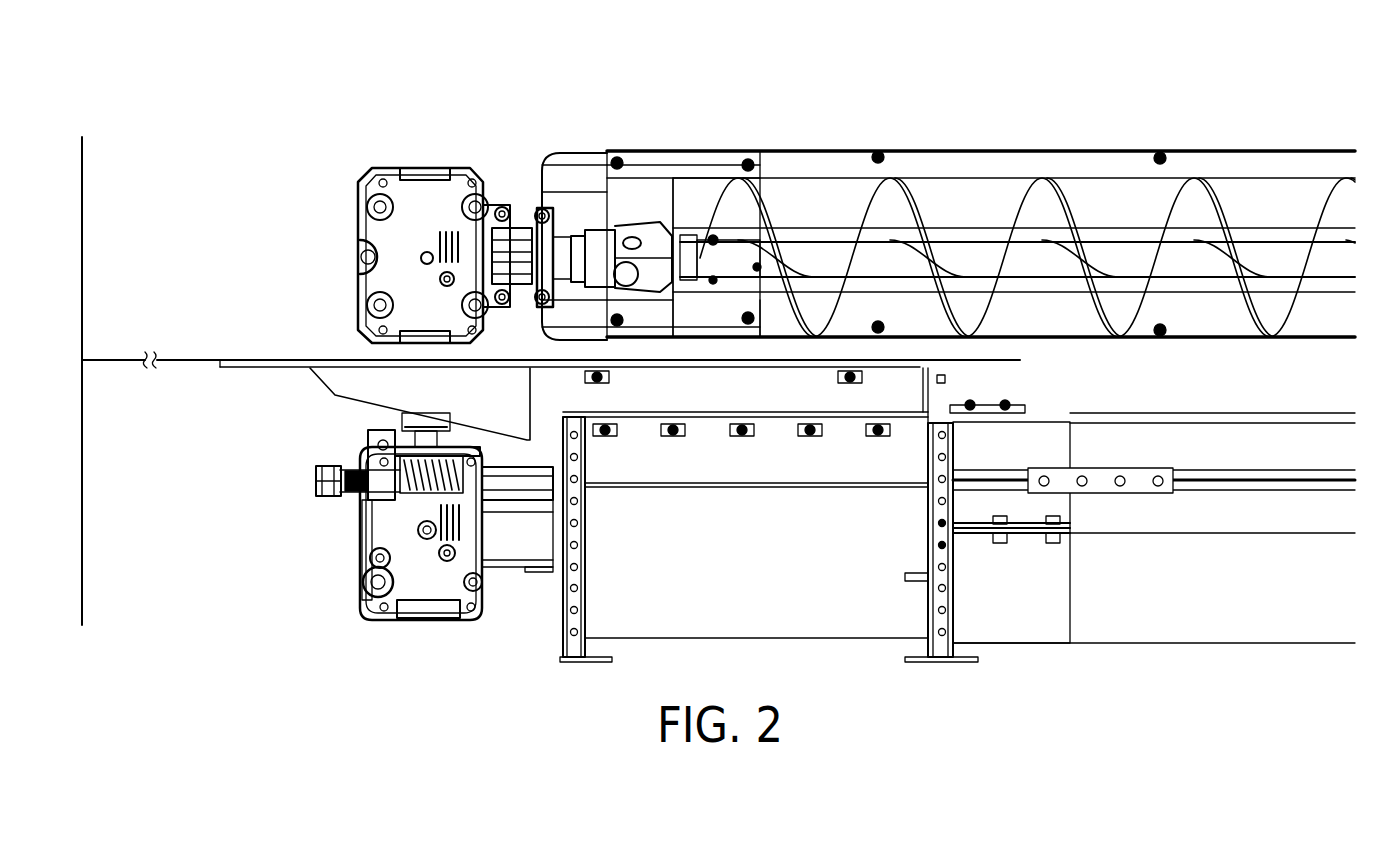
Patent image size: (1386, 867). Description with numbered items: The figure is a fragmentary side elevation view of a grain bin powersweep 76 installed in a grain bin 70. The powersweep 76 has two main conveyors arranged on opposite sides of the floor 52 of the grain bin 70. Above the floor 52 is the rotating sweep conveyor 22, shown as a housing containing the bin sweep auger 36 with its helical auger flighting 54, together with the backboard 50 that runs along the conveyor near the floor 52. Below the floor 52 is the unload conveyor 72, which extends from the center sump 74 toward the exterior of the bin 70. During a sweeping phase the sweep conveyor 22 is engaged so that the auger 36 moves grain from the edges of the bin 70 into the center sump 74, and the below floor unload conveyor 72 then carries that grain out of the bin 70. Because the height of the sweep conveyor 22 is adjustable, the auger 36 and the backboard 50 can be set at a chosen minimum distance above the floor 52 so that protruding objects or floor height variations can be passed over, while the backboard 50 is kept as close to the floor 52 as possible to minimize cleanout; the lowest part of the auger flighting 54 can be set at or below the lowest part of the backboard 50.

The sweep conveyor 22 is at (1003, 165).
The auger 36 is at (865, 205).
The backboard 50 is at (1190, 315).
The floor 52 is at (186, 360).
The auger flighting 54 is at (1275, 305).
The grain bin 70 is at (83, 208).
The unload conveyor 72 is at (1213, 612).
The center sump 74 is at (760, 612).
The grain bin powersweep 76 is at (976, 75).